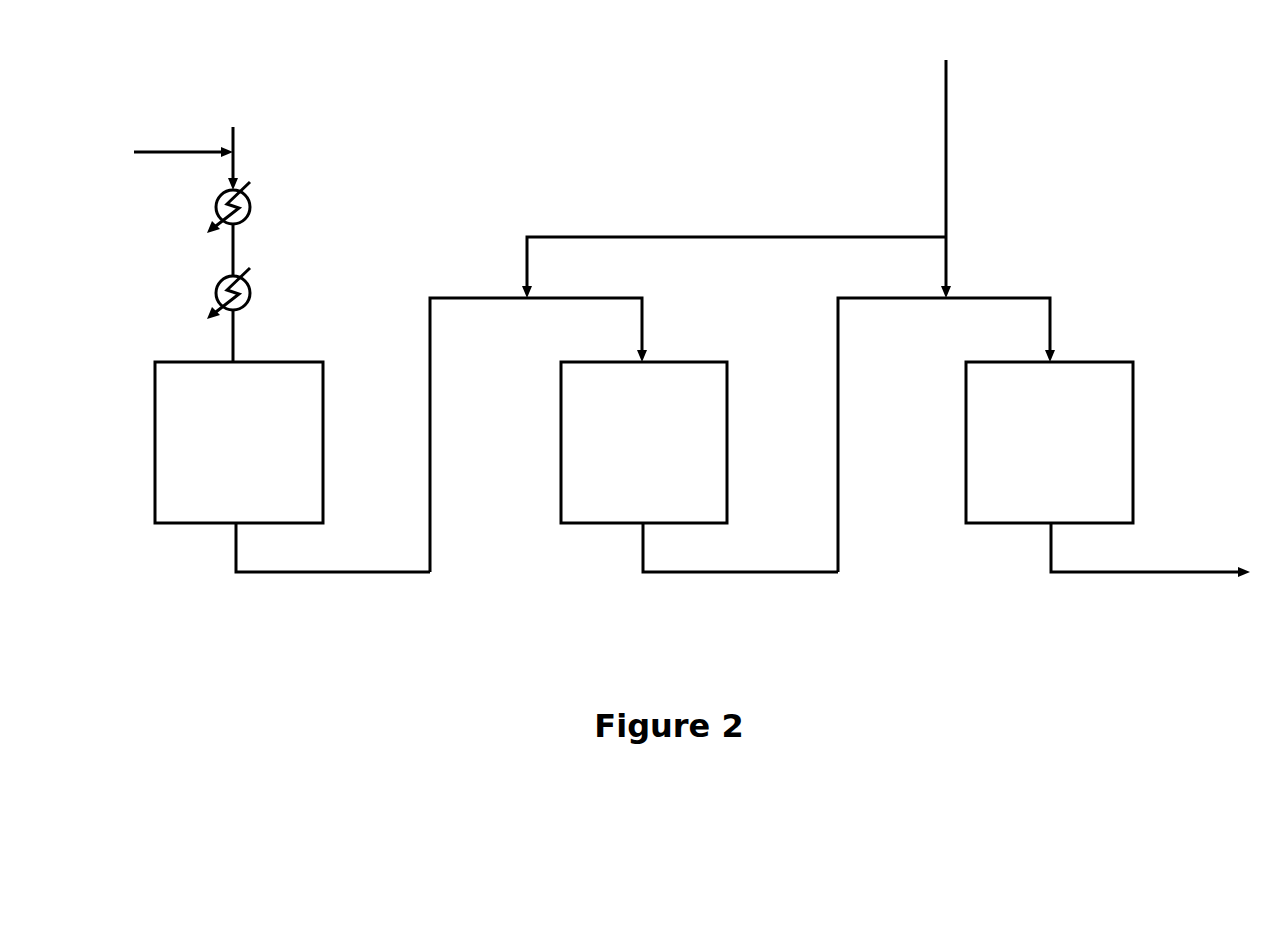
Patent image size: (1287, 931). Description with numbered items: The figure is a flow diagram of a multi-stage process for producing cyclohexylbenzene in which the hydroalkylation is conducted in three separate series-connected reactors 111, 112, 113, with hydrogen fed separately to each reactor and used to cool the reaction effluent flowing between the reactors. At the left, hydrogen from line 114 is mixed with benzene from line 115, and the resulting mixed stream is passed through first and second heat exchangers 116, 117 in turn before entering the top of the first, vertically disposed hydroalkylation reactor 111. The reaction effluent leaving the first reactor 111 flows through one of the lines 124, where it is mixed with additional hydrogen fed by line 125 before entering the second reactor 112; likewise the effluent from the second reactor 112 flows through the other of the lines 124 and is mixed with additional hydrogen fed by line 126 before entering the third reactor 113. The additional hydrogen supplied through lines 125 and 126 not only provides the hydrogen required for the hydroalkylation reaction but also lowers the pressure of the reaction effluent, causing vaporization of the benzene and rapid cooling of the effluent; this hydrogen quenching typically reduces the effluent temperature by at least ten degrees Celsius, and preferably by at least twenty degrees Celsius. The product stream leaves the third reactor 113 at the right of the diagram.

The first hydroalkylation reactor 111 is at (239, 442).
The second hydroalkylation reactor 112 is at (644, 442).
The third hydroalkylation reactor 113 is at (1049, 442).
The hydrogen line 114 is at (237, 144).
The benzene line 115 is at (182, 152).
The first heat exchanger 116 is at (251, 205).
The second heat exchanger 117 is at (251, 292).
The reaction effluent lines 124 is at (360, 572).
The additional hydrogen line 125 is at (590, 237).
The additional hydrogen line 126 is at (948, 250).